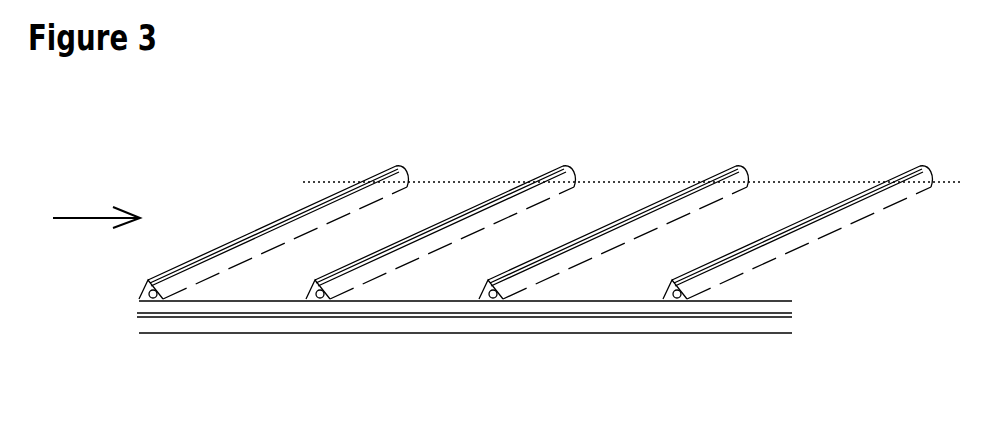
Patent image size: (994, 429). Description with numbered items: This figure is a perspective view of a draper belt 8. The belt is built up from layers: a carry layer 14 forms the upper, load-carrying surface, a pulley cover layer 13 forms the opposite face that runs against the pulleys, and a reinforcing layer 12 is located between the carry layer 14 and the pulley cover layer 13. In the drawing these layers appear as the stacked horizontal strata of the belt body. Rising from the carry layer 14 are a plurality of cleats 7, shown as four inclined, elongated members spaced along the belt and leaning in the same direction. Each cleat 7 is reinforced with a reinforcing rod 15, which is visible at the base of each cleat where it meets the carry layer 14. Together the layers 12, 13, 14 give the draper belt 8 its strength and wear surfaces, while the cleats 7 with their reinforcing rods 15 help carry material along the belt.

The cleats 7 is at (553, 185).
The draper belt 8 is at (88, 216).
The reinforcing layer 12 is at (572, 313).
The pulley cover layer 13 is at (245, 323).
The carry layer 14 is at (713, 233).
The reinforcing rods 15 is at (493, 297).